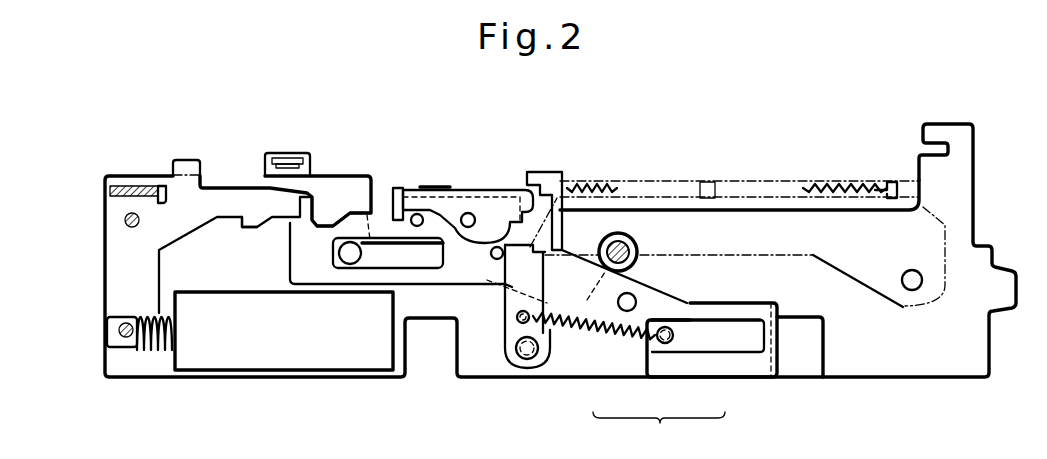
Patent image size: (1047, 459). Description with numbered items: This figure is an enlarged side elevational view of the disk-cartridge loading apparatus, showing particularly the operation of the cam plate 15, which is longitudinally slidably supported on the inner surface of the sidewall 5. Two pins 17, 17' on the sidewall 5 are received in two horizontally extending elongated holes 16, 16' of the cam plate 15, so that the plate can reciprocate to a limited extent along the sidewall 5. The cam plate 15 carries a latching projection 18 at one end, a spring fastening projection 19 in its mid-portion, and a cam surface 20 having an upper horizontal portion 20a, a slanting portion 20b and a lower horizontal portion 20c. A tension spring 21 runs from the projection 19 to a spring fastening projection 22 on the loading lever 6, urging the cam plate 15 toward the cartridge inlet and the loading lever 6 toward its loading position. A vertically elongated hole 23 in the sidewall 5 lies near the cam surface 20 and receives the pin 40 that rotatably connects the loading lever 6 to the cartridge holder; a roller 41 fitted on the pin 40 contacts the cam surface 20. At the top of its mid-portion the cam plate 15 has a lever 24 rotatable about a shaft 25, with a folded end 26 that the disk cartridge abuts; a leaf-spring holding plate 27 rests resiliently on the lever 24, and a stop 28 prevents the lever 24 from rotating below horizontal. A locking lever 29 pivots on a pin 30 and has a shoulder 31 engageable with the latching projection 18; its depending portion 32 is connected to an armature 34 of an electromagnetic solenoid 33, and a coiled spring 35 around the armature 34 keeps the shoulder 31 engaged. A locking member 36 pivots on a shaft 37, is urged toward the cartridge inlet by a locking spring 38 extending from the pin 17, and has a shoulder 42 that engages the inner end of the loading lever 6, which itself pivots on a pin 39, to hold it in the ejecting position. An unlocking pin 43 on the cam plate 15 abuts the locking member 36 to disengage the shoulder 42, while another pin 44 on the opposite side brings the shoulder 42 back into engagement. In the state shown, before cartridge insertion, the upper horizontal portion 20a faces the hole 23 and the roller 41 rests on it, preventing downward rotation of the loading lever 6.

The sidewall 5 is at (915, 378).
The loading lever 6 is at (955, 222).
The cam plate 15 is at (434, 288).
The elongated hole 16 is at (720, 357).
The elongated hole 16' is at (399, 283).
The pin 17 is at (708, 311).
The pin 17' is at (374, 281).
The latching projection 18 is at (322, 220).
The spring fastening projection 19 is at (546, 170).
The cam surface 20 is at (659, 431).
The upper horizontal portion 20a is at (612, 272).
The slanting portion 20b is at (633, 320).
The lower horizontal portion 20c is at (702, 272).
The tension spring 21 is at (828, 184).
The spring fastening projection 22 is at (893, 181).
The vertically elongated hole 23 is at (555, 306).
The lever 24 is at (470, 189).
The shaft 25 is at (473, 214).
The folded end 26 is at (398, 187).
The holding plate 27 is at (440, 186).
The stop 28 is at (416, 213).
The locking lever 29 is at (236, 185).
The pin 30 is at (125, 219).
The shoulder 31 is at (258, 230).
The depending portion 32 is at (122, 289).
The electromagnetic solenoid 33 is at (276, 368).
The armature 34 is at (128, 350).
The coiled spring 35 is at (162, 352).
The locking member 36 is at (515, 320).
The shaft 37 is at (527, 360).
The locking spring 38 is at (586, 328).
The pin 39 is at (912, 288).
The pin 40 is at (616, 240).
The roller 41 is at (622, 242).
The shoulder 42 is at (724, 266).
The unlocking pin 43 is at (637, 302).
The pin 44 is at (495, 262).